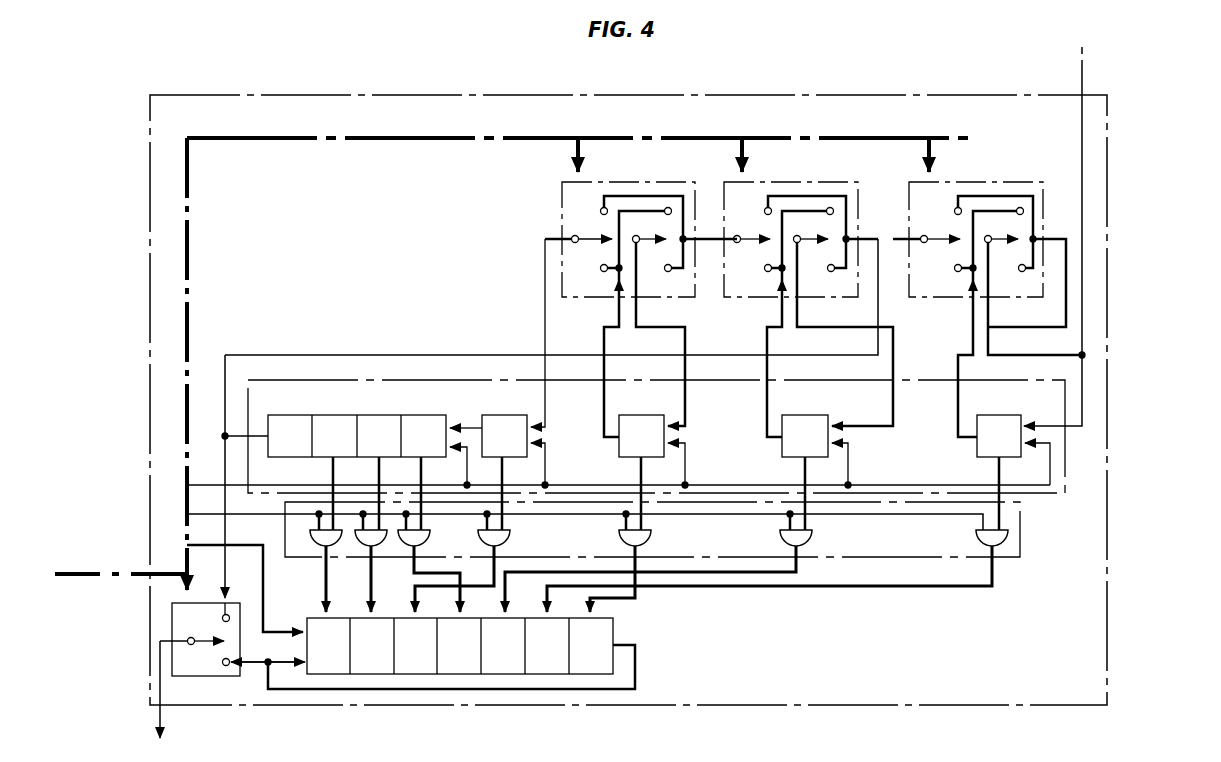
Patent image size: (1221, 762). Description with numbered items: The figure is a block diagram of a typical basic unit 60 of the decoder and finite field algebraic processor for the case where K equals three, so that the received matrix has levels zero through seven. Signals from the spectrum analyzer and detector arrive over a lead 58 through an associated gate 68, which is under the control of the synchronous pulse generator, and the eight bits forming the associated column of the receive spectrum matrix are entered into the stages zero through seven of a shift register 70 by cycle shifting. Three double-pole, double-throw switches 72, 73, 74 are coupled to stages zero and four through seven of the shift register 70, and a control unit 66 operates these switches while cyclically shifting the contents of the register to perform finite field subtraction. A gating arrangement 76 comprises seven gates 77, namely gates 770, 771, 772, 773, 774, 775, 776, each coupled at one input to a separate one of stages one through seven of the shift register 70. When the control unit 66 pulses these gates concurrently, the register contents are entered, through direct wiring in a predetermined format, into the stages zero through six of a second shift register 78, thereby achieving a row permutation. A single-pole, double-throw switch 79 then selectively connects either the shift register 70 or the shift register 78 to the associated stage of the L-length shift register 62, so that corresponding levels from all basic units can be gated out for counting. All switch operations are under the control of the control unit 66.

The basic unit 60 is at (270, 127).
The lead 58 is at (1080, 113).
The gate 68 is at (1083, 92).
The control unit 66 is at (82, 573).
The L-length shift register 62 is at (165, 720).
The shift register 70 is at (426, 388).
The double-pole, double-throw switch 72 is at (1000, 185).
The double-pole, double-throw switch 73 is at (650, 187).
The double-pole, double-throw switch 74 is at (813, 187).
The gating arrangement 76 is at (1021, 511).
The gates 77 is at (648, 561).
The gate 770 is at (315, 570).
The gate 771 is at (362, 549).
The gate 772 is at (404, 549).
The gate 773 is at (462, 570).
The gate 774 is at (619, 542).
The gate 775 is at (780, 542).
The gate 776 is at (978, 542).
The shift register 78 is at (614, 622).
The single-pole, double-throw switch 79 is at (229, 601).